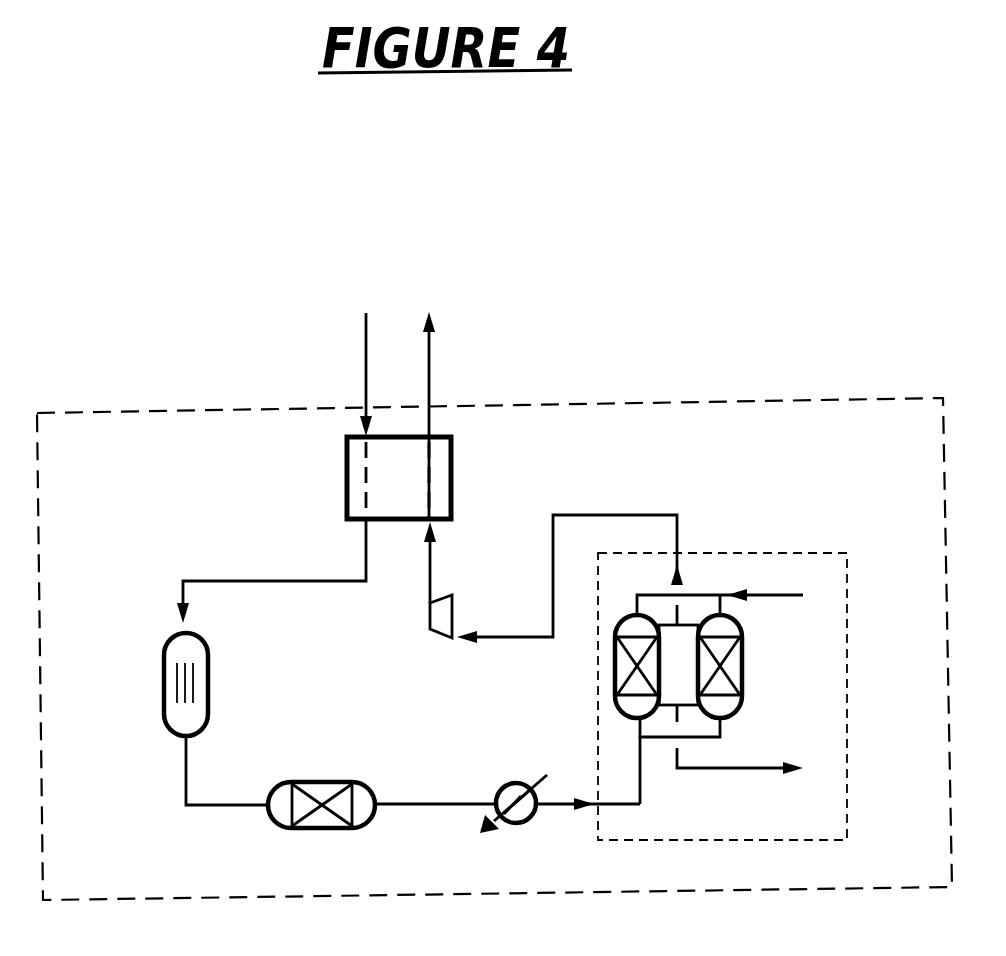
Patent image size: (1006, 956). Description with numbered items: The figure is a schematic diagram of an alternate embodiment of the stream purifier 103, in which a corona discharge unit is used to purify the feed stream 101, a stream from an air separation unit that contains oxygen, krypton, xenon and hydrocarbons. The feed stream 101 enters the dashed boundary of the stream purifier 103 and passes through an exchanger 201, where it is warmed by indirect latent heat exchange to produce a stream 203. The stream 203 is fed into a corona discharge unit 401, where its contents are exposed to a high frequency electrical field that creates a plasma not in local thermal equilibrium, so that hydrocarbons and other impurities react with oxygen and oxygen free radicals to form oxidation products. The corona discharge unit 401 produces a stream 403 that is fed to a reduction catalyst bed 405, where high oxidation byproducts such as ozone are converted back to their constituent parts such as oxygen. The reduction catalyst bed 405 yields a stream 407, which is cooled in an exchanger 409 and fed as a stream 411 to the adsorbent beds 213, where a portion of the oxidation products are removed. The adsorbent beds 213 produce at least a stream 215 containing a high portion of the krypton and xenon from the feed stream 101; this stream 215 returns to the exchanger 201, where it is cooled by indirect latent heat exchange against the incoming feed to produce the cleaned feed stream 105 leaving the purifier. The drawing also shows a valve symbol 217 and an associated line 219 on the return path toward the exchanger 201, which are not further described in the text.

The feed stream 101 is at (365, 382).
The stream purifier 103 is at (985, 545).
The cleaned feed stream 105 is at (473, 370).
The exchanger 201 is at (347, 485).
The stream 203 is at (265, 579).
The adsorbent beds 213 is at (882, 680).
The stream 215 is at (625, 515).
The expansion valve 217 is at (487, 603).
The lean solvent return line 219 is at (430, 590).
The corona discharge unit 401 is at (244, 665).
The stream 403 is at (196, 808).
The reduction catalyst bed 405 is at (320, 781).
The stream 407 is at (445, 806).
The exchanger 409 is at (522, 782).
The stream 411 is at (567, 805).